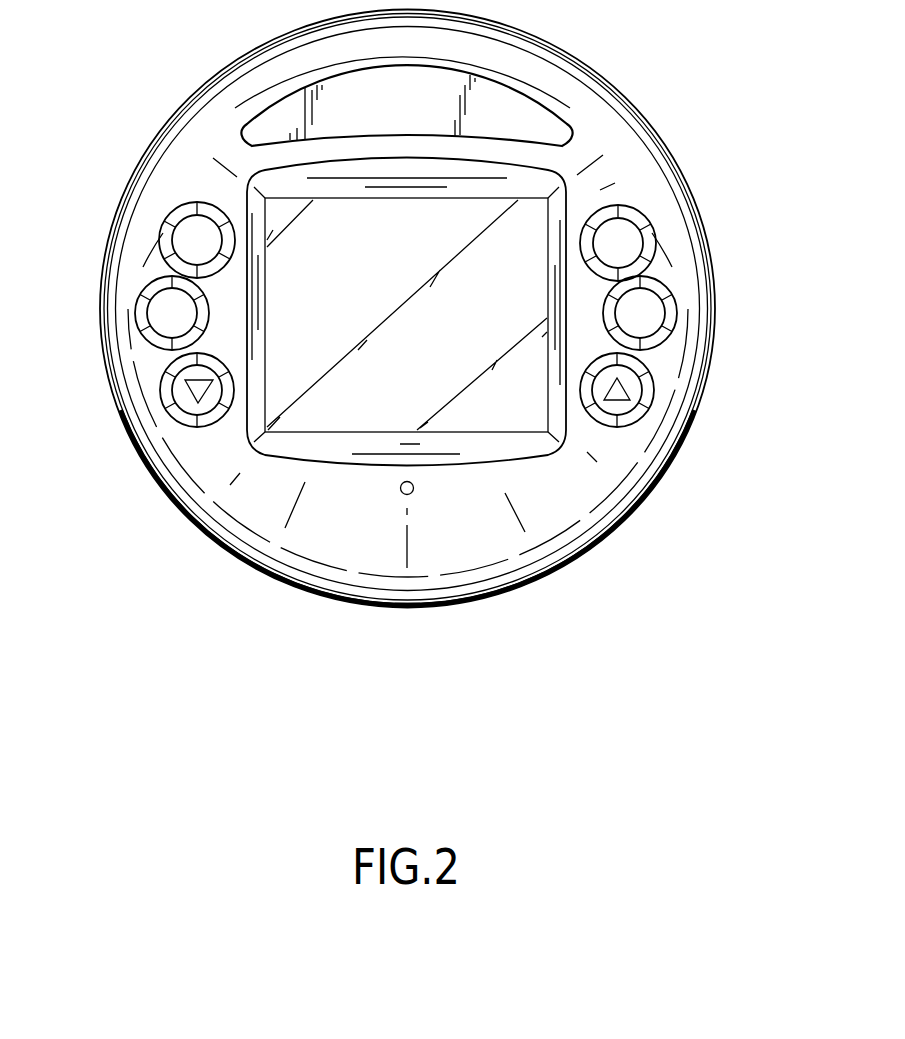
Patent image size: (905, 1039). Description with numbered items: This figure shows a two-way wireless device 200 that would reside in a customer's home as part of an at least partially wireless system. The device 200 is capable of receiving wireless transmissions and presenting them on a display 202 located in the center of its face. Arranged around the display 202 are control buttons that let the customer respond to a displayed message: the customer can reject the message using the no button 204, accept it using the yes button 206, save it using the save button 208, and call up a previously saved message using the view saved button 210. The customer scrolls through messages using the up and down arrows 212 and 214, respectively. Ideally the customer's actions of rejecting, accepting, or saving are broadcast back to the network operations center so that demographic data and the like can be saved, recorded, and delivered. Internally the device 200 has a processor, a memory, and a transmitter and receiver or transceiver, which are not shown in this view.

The two-way wireless device 200 is at (650, 497).
The display 202 is at (533, 210).
The no button 204 is at (197, 232).
The yes button 206 is at (628, 233).
The save button 208 is at (163, 302).
The view saved button 210 is at (663, 312).
The up arrow 212 is at (640, 387).
The down arrow 214 is at (183, 402).